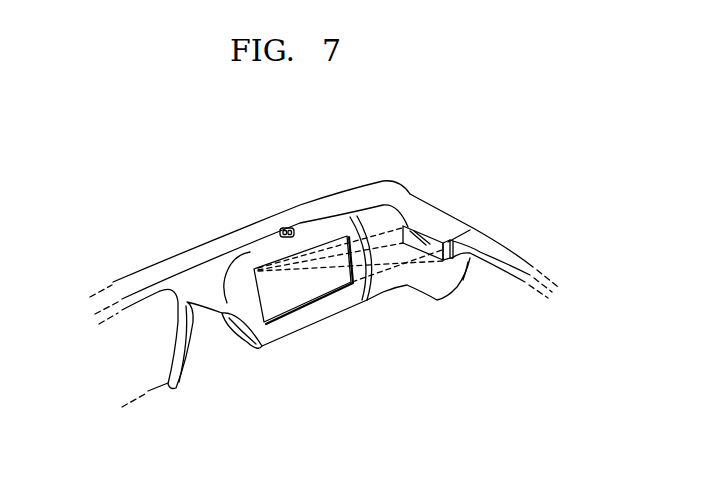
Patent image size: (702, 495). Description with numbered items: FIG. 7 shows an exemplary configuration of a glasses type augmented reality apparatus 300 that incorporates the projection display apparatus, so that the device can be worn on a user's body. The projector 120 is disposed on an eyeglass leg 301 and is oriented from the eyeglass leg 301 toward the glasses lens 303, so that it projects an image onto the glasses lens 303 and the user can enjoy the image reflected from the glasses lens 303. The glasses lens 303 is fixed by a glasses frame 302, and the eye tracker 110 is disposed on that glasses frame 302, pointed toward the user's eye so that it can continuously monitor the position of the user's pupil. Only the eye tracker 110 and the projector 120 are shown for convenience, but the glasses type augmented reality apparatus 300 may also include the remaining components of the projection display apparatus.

The eye tracker 110 is at (288, 228).
The projector 120 is at (420, 237).
The glasses type augmented reality apparatus 300 is at (367, 339).
The eyeglass leg 301 is at (447, 225).
The glasses frame 302 is at (231, 238).
The glasses lens 303 is at (288, 323).